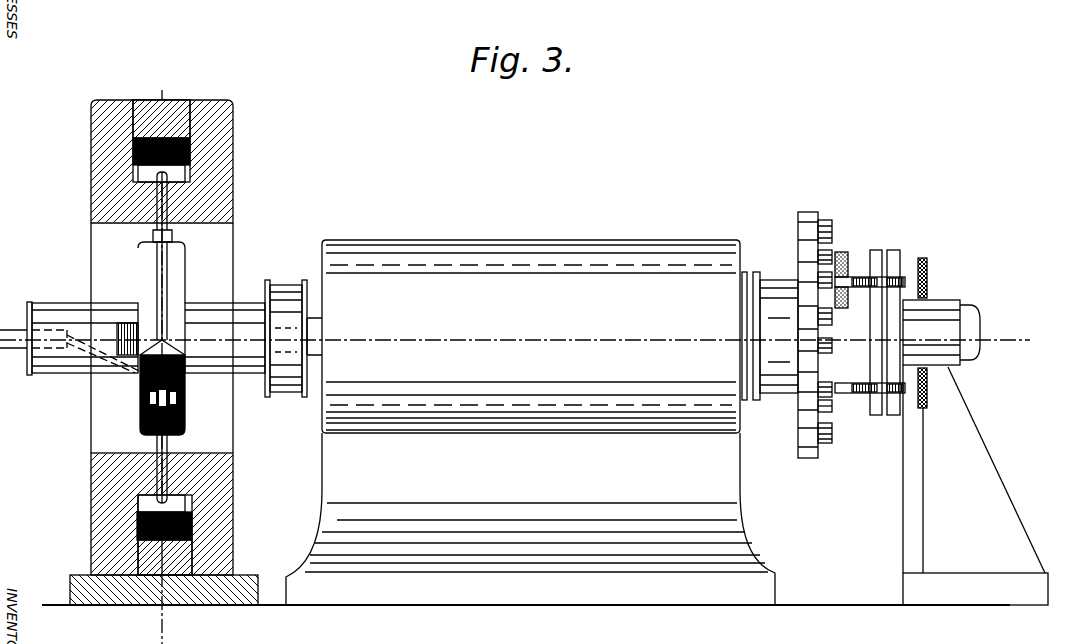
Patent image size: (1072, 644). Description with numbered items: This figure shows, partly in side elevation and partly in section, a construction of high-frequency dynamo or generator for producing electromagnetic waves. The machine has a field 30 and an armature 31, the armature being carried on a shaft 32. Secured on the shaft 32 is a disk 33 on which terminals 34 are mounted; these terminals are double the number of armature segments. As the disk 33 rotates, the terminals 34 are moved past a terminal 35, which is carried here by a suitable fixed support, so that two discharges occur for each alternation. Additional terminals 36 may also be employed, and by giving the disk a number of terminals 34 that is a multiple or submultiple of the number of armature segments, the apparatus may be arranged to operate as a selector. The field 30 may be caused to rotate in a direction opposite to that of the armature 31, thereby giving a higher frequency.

The field 30 is at (233, 124).
The armature 31 is at (160, 257).
The shaft 32 is at (236, 294).
The disk 33 is at (803, 214).
The terminals 34 is at (831, 222).
The terminal 35 is at (926, 262).
The additional terminals 36 is at (952, 378).